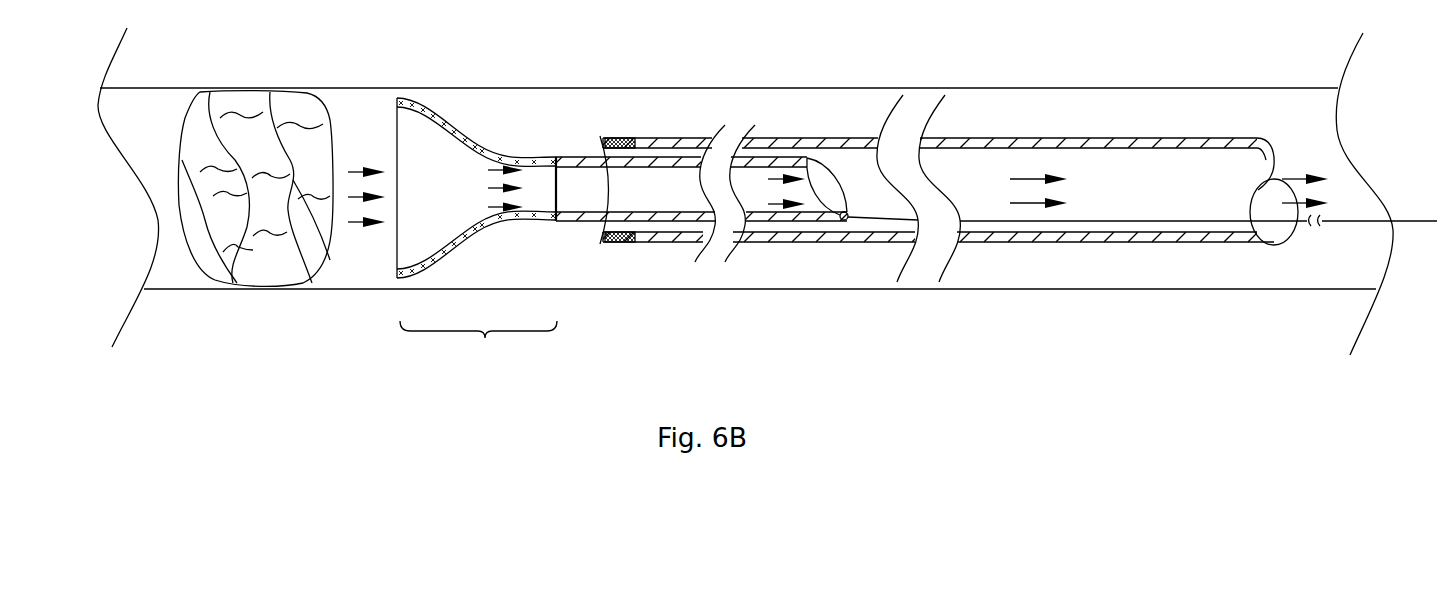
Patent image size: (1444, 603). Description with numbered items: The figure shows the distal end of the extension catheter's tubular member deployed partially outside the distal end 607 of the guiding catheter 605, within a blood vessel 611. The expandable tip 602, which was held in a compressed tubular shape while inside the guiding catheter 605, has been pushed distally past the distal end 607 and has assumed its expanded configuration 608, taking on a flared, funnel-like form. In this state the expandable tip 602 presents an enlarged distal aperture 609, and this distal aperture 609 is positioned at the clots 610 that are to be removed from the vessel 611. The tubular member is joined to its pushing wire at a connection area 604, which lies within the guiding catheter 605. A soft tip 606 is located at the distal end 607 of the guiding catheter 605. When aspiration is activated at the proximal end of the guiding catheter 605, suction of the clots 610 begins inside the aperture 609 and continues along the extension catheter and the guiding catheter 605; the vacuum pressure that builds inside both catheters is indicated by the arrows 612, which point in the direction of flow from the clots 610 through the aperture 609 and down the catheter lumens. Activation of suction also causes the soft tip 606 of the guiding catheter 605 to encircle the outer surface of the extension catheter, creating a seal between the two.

The expandable tip 602 is at (414, 197).
The connection area 604 is at (848, 223).
The guiding catheter 605 is at (775, 135).
The soft tip 606 is at (620, 133).
The distal end 607 is at (600, 233).
The expanded configuration 608 is at (450, 117).
The distal aperture 609 is at (390, 130).
The clots 610 is at (247, 133).
The vessel 611 is at (1020, 87).
The arrows 612 is at (493, 167).